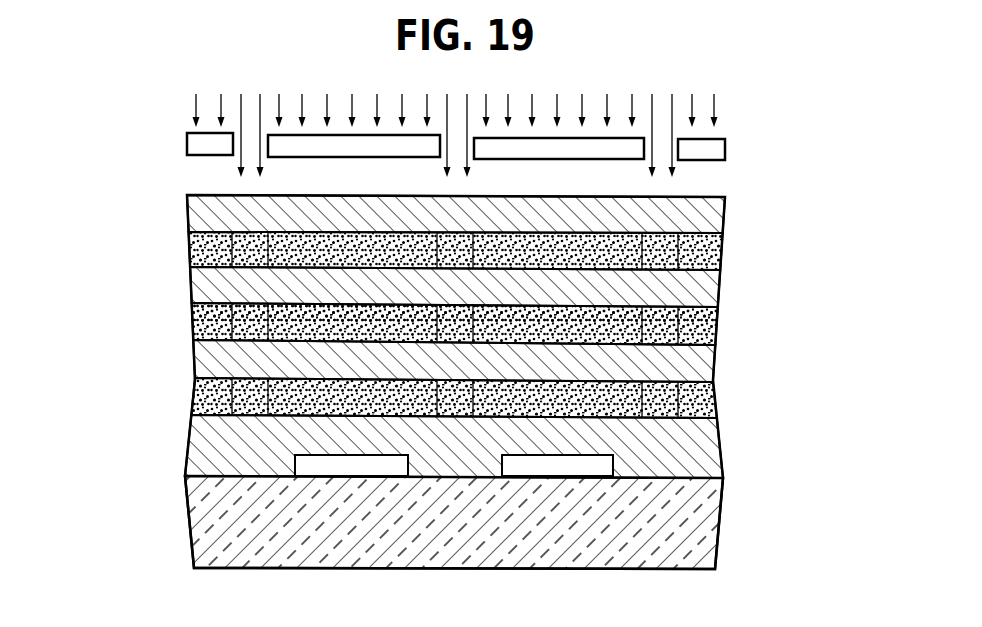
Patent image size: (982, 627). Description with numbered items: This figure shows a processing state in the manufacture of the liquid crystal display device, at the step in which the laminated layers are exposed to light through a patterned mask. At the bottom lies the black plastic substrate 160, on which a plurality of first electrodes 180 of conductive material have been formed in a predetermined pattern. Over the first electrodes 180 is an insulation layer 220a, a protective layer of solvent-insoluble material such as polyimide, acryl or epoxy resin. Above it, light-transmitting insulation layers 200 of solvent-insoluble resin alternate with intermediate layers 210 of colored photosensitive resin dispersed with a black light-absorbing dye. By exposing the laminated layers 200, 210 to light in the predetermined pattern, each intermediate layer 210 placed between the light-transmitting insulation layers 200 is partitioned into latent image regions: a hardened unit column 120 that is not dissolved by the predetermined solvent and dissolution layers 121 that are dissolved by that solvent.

The light-transmitting insulation layer 200 is at (730, 218).
The intermediate layer 210 is at (724, 256).
The dissolution layer 121 is at (715, 326).
The hardened unit column 120 is at (713, 337).
The insulation layer 220a is at (718, 450).
The black plastic substrate 160 is at (718, 507).
The first electrode 180 is at (353, 468).